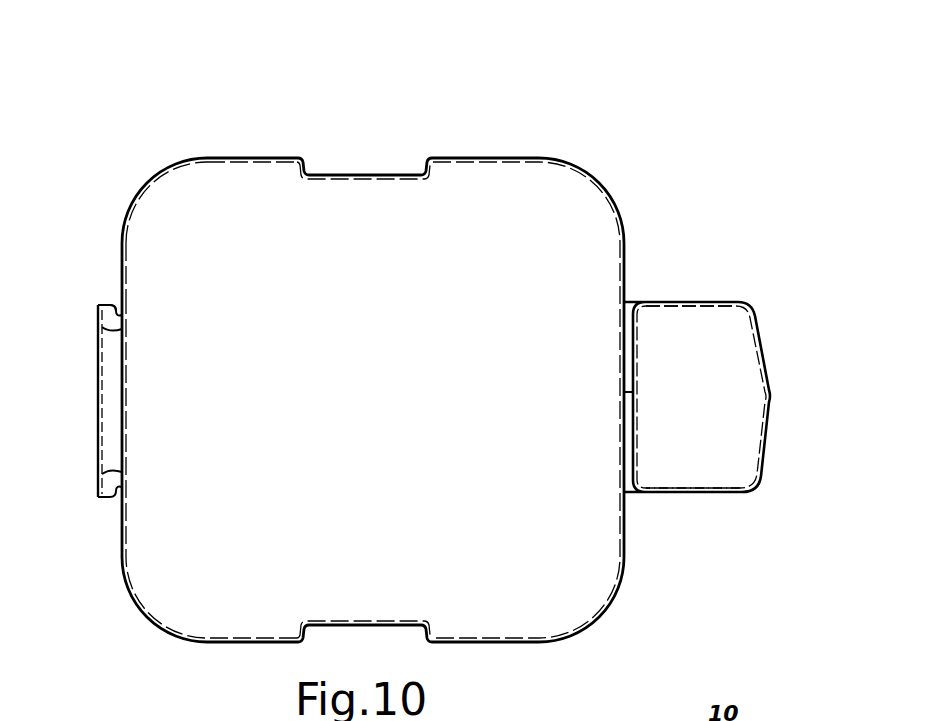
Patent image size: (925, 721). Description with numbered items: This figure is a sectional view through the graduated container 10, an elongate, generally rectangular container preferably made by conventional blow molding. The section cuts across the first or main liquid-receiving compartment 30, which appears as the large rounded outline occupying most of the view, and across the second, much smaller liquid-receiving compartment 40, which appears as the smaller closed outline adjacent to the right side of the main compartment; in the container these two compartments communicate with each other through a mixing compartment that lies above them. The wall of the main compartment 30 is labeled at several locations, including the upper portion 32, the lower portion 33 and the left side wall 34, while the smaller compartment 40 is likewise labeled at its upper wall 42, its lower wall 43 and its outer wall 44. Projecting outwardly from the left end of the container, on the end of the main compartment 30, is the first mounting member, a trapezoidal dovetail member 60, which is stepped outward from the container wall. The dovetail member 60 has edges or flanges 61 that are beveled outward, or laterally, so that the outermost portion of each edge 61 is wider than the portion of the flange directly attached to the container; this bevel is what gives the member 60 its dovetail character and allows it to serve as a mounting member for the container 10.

The graduated container 10 is at (645, 101).
The main liquid-receiving compartment 30 is at (220, 522).
The top notch 32 is at (250, 158).
The bottom notch 33 is at (238, 642).
The left side wall 34 is at (120, 262).
The second liquid-receiving compartment 40 is at (707, 418).
The compartment top wall 42 is at (695, 300).
The compartment bottom wall 43 is at (690, 493).
The compartment outer wall 44 is at (768, 348).
The trapezoidal dovetail member 60 is at (110, 392).
The beveled edges or flanges 61 is at (105, 308).